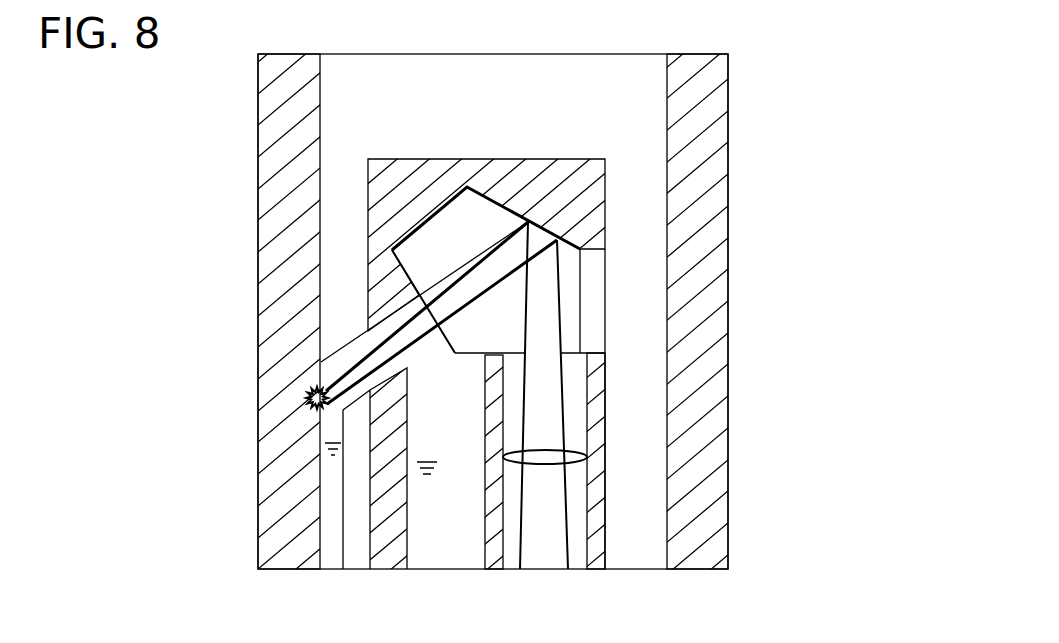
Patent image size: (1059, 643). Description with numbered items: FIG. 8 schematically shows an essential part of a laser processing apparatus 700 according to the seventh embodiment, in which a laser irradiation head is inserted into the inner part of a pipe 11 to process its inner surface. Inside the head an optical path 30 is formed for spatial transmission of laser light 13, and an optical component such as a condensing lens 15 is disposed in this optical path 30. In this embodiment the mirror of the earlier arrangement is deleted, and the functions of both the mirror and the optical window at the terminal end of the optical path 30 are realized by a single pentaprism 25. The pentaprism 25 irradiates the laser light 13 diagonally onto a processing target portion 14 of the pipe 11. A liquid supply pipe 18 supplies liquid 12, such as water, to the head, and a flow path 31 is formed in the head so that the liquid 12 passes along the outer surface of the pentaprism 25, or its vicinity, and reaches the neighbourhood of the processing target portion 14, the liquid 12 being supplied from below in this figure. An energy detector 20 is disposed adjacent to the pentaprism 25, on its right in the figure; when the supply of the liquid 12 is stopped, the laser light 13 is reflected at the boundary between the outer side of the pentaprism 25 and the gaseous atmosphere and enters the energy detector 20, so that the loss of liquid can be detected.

The laser processing apparatus 700 is at (584, 91).
The pipe 11 is at (718, 90).
The liquid 12 is at (330, 481).
The laser light 13 is at (545, 554).
The processing target portion 14 is at (306, 401).
The condensing lens 15 is at (590, 456).
The liquid supply pipe 18 is at (445, 546).
The energy detector 20 is at (596, 313).
The pentaprism 25 is at (462, 212).
The optical path 30 is at (583, 380).
The flow path 31 is at (407, 460).